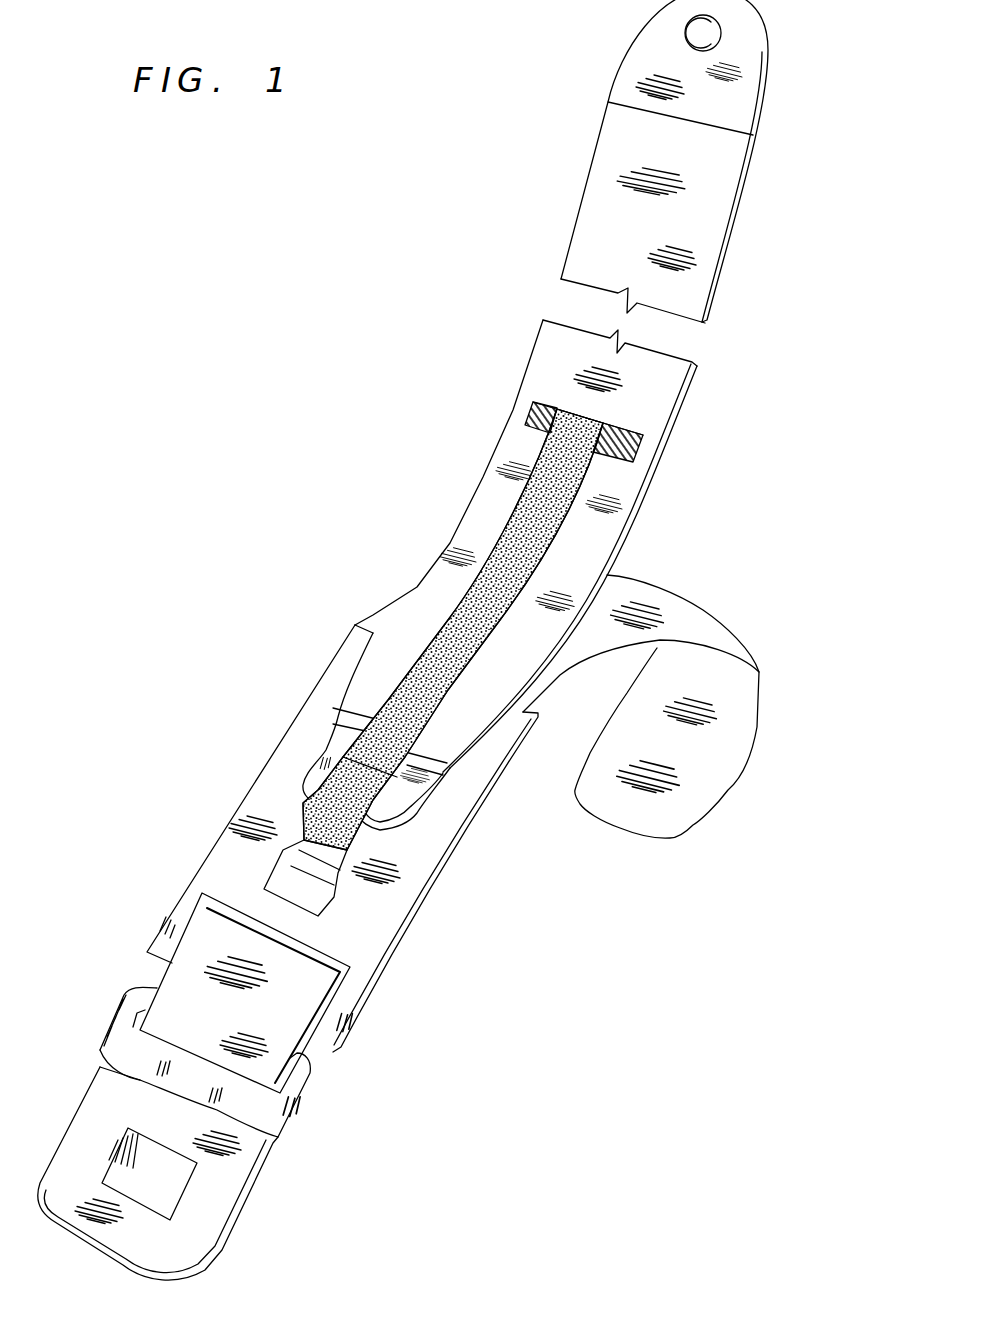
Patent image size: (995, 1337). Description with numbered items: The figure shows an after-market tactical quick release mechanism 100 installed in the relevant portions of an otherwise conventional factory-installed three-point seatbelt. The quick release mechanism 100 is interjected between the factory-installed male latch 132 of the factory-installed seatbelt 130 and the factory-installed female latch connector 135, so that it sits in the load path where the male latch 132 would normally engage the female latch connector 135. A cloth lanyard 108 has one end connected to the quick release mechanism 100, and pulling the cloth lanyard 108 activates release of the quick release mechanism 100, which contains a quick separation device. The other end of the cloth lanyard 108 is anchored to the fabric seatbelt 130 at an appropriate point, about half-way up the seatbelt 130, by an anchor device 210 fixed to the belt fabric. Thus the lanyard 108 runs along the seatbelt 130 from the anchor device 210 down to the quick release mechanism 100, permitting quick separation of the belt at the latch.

The tactical quick release mechanism 100 is at (380, 938).
The cloth lanyard 108 is at (450, 620).
The seatbelt 130 is at (688, 481).
The male latch 132 is at (340, 741).
The female latch connector 135 is at (200, 1223).
The anchor device 210 is at (537, 416).